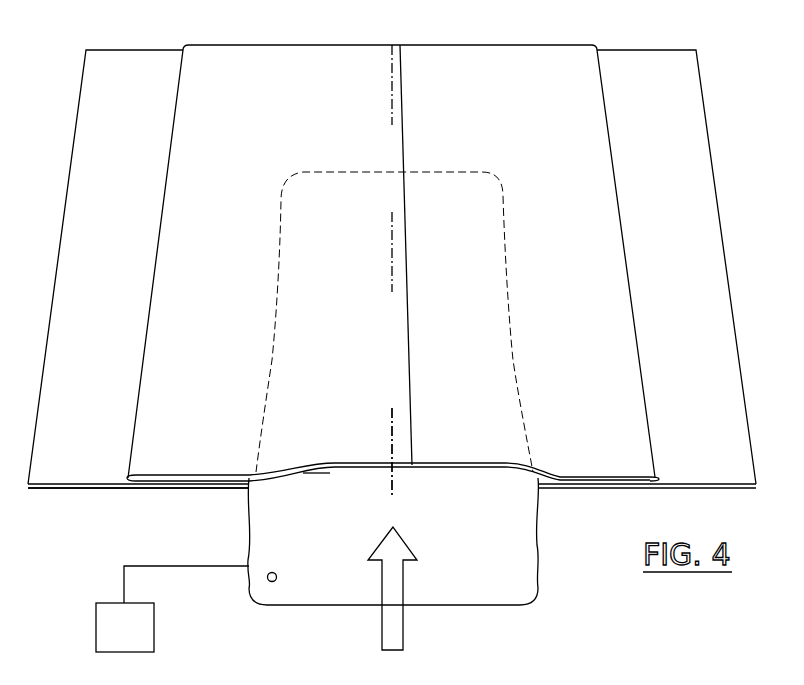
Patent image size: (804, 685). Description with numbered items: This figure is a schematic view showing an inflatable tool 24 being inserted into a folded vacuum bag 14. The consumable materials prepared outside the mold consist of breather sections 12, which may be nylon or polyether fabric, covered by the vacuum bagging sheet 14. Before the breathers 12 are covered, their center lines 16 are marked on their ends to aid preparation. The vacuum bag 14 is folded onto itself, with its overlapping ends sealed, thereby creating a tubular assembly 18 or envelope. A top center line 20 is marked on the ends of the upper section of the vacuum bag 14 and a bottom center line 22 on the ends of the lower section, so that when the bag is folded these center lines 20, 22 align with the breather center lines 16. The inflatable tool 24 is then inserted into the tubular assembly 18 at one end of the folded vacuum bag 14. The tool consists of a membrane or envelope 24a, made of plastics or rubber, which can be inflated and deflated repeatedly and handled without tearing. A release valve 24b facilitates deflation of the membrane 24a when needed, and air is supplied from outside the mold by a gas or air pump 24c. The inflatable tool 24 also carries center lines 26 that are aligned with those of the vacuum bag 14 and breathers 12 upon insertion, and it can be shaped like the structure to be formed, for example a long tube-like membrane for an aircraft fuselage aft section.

The breather section 12 is at (74, 406).
The vacuum bagging sheet 14 is at (547, 62).
The center lines 16 is at (392, 228).
The tubular assembly 18 is at (186, 484).
The top center line 20 is at (392, 60).
The bottom center line 22 is at (392, 423).
The inflatable tool 24 is at (317, 581).
The inflatable membrane 24a is at (323, 546).
The release valve 24b is at (268, 580).
The air pump 24c is at (105, 641).
The center lines 26 is at (395, 513).